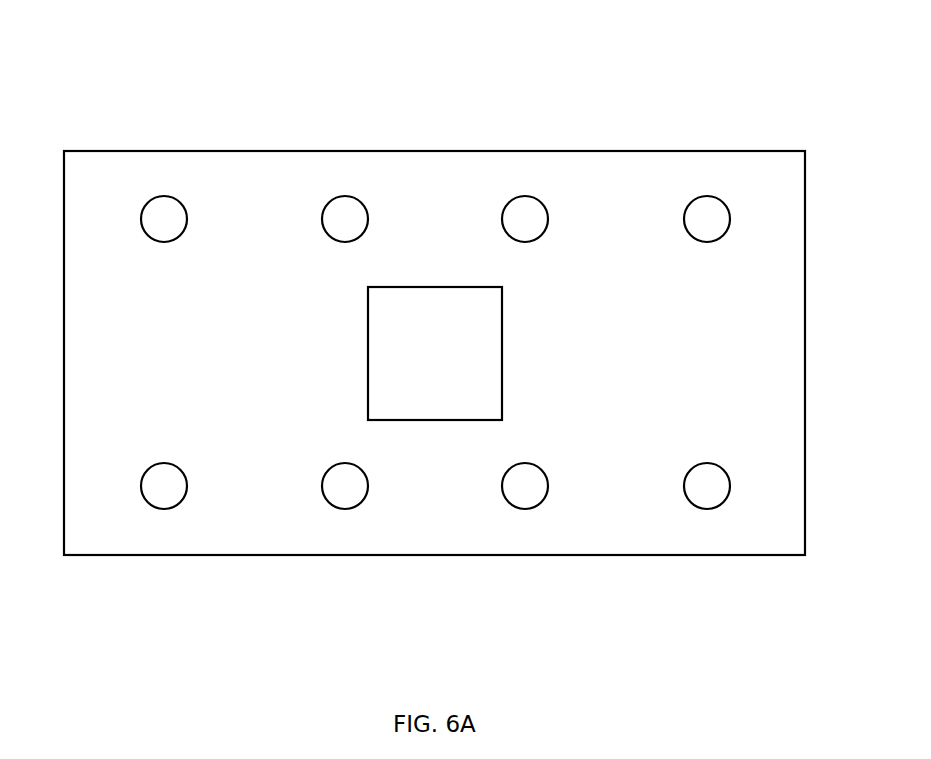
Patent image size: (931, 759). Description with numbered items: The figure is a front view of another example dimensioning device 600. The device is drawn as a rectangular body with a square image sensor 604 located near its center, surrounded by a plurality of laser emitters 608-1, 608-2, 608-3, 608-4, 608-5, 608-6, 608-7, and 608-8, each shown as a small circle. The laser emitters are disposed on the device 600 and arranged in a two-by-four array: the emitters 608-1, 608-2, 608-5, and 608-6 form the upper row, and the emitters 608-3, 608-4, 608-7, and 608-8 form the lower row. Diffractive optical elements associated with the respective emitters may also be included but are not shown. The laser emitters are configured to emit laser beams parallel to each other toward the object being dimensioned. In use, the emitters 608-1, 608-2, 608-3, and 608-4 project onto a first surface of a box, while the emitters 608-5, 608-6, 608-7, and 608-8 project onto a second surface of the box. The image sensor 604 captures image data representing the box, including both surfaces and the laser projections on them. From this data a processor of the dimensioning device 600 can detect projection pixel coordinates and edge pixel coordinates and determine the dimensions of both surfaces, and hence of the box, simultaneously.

The dimensioning device 600 is at (358, 87).
The image sensor 604 is at (502, 352).
The laser emitter 608-1 is at (143, 199).
The laser emitter 608-2 is at (329, 201).
The laser emitter 608-3 is at (162, 509).
The laser emitter 608-4 is at (343, 509).
The laser emitter 608-5 is at (526, 197).
The laser emitter 608-6 is at (706, 197).
The laser emitter 608-7 is at (523, 509).
The laser emitter 608-8 is at (703, 509).